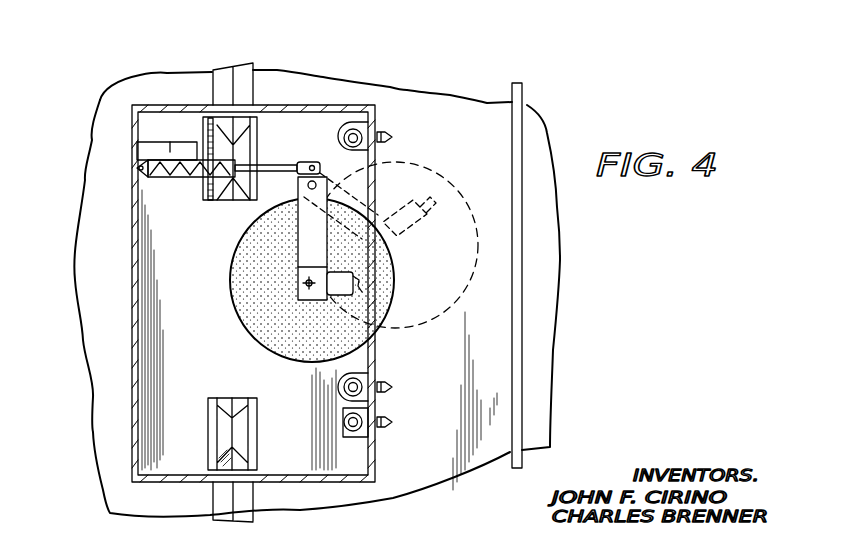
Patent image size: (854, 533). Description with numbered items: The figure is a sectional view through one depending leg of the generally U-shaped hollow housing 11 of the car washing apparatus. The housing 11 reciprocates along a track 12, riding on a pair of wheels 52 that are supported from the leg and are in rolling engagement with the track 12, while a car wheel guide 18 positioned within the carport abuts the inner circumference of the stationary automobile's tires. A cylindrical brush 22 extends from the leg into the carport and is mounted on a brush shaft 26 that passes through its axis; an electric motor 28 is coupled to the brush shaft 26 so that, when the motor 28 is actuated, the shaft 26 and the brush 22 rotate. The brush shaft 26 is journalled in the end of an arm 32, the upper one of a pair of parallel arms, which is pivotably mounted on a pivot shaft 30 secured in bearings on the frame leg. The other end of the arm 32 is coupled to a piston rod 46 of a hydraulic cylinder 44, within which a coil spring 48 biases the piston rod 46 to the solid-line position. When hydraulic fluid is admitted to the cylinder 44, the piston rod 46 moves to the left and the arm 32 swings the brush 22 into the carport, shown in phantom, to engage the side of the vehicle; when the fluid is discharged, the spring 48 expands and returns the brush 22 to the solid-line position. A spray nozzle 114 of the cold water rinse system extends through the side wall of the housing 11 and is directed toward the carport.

The housing 11 is at (132, 222).
The track 12 is at (243, 78).
The car wheel guide 18 is at (518, 86).
The cylindrical brush 22 is at (233, 249).
The brush shaft 26 is at (300, 287).
The electric motor 28 is at (348, 293).
The pivot shaft 30 is at (318, 183).
The arm 32 is at (308, 212).
The hydraulic cylinder 44 is at (162, 178).
The piston rod 46 is at (274, 166).
The coil spring 48 is at (196, 178).
The wheels 52 is at (243, 432).
The spray nozzle 114 is at (392, 386).